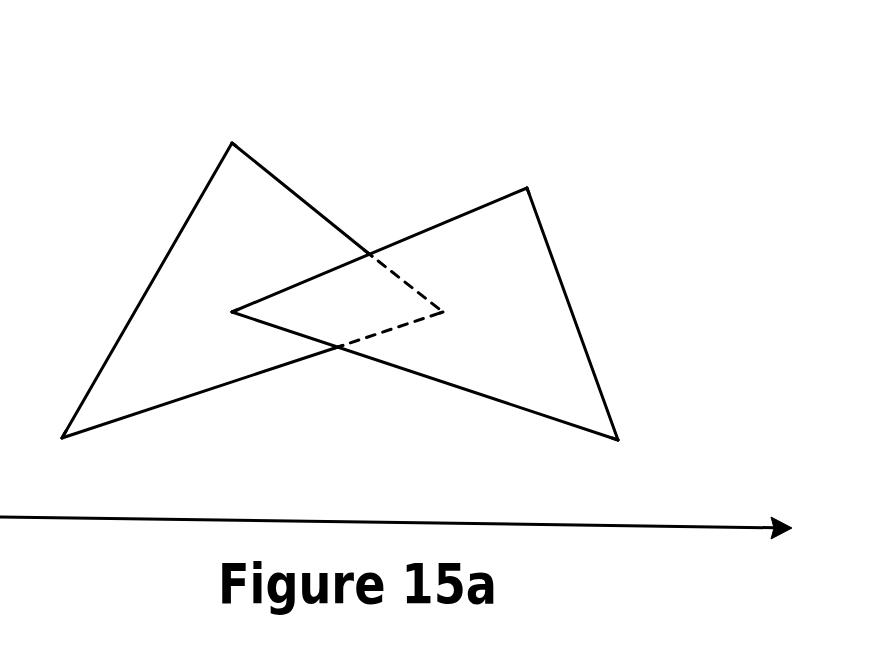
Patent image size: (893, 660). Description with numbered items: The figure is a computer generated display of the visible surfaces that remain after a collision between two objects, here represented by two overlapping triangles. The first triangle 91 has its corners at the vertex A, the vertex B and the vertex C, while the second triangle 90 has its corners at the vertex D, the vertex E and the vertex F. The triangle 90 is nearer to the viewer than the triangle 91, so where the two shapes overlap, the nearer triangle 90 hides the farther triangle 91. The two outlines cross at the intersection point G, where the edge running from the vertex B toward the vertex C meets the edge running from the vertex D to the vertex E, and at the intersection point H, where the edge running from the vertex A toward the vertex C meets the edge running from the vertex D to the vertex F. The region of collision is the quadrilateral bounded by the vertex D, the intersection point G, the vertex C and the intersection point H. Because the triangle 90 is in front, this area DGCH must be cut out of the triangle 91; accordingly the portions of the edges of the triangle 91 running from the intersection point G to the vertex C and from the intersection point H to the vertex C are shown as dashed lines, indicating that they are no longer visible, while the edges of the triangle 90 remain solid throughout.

The triangle 91 is at (216, 224).
The triangle 90 is at (473, 265).
The vertex A is at (53, 453).
The vertex B is at (228, 124).
The vertex C is at (457, 316).
The vertex D is at (217, 314).
The vertex E is at (540, 174).
The vertex F is at (628, 452).
The intersection point G is at (373, 234).
The intersection point H is at (342, 369).